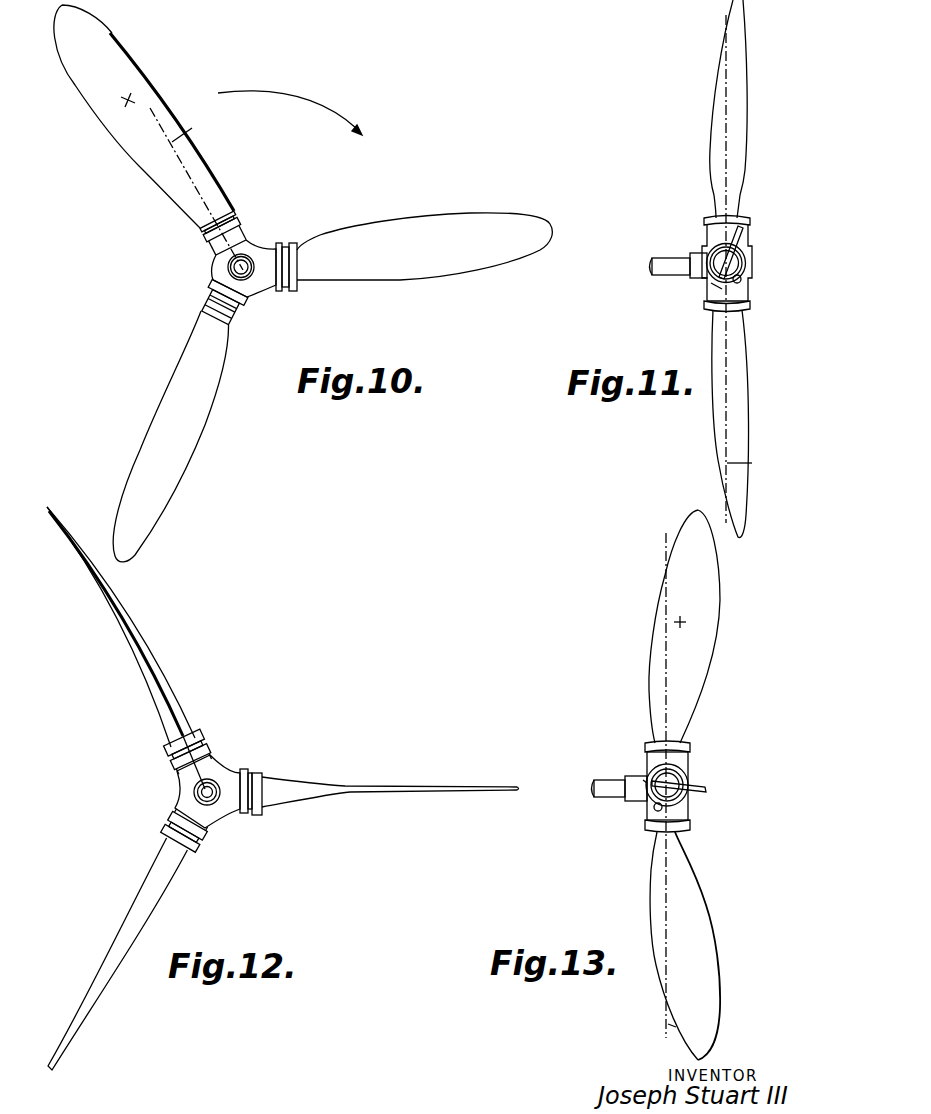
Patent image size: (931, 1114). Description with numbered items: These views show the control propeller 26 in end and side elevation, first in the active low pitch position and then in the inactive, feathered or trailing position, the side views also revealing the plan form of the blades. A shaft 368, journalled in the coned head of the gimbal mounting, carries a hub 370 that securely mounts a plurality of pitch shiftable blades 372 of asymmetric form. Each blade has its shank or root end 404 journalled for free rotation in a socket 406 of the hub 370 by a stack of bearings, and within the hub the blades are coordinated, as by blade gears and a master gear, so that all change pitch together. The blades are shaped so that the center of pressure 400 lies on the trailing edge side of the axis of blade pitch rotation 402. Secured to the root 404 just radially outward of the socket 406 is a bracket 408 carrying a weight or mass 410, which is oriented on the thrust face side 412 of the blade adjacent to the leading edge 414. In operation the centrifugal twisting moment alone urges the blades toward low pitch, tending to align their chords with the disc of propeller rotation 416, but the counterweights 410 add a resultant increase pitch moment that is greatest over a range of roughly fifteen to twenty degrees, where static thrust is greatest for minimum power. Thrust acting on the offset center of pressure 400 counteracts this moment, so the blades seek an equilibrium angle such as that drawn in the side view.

In FIG. 10, the control propeller 26 is at (170, 327).
In FIG. 11, the control propeller 26 is at (779, 372).
In FIG. 10, the shaft 368 is at (266, 246).
In FIG. 11, the shaft 368 is at (673, 262).
In FIG. 12, the shaft 368 is at (215, 805).
In FIG. 13, the shaft 368 is at (602, 790).
In FIG. 10, the hub 370 is at (214, 270).
In FIG. 11, the hub 370 is at (752, 256).
In FIG. 12, the hub 370 is at (183, 791).
In FIG. 13, the hub 370 is at (693, 785).
In FIG. 10, the pitch shiftable blades 372 is at (181, 436).
In FIG. 11, the pitch shiftable blades 372 is at (716, 113).
In FIG. 12, the pitch shiftable blades 372 is at (125, 631).
In FIG. 13, the pitch shiftable blades 372 is at (651, 879).
In FIG. 10, the center of pressure 400 is at (157, 85).
In FIG. 13, the center of pressure 400 is at (721, 629).
In FIG. 10, the axis of blade pitch rotation 402 is at (198, 124).
In FIG. 10, the shank or root end 404 is at (195, 222).
In FIG. 11, the shank or root end 404 is at (703, 199).
In FIG. 12, the shank or root end 404 is at (178, 851).
In FIG. 13, the shank or root end 404 is at (628, 851).
In FIG. 10, the socket 406 is at (297, 279).
In FIG. 11, the socket 406 is at (736, 299).
In FIG. 12, the socket 406 is at (207, 762).
In FIG. 13, the socket 406 is at (691, 734).
In FIG. 10, the bracket 408 is at (244, 216).
In FIG. 12, the bracket 408 is at (170, 756).
In FIG. 13, the bracket 408 is at (688, 805).
In FIG. 10, the weight or mass 410 is at (231, 198).
In FIG. 11, the weight or mass 410 is at (743, 281).
In FIG. 12, the weight or mass 410 is at (201, 731).
In FIG. 13, the weight or mass 410 is at (655, 810).
In FIG. 11, the thrust face side 412 is at (746, 238).
In FIG. 13, the thrust face side 412 is at (710, 790).
In FIG. 10, the leading edge 414 is at (172, 122).
In FIG. 11, the leading edge 414 is at (713, 283).
In FIG. 13, the leading edge 414 is at (643, 780).
In FIG. 11, the disc of propeller rotation 416 is at (752, 463).
In FIG. 13, the disc of propeller rotation 416 is at (668, 1024).